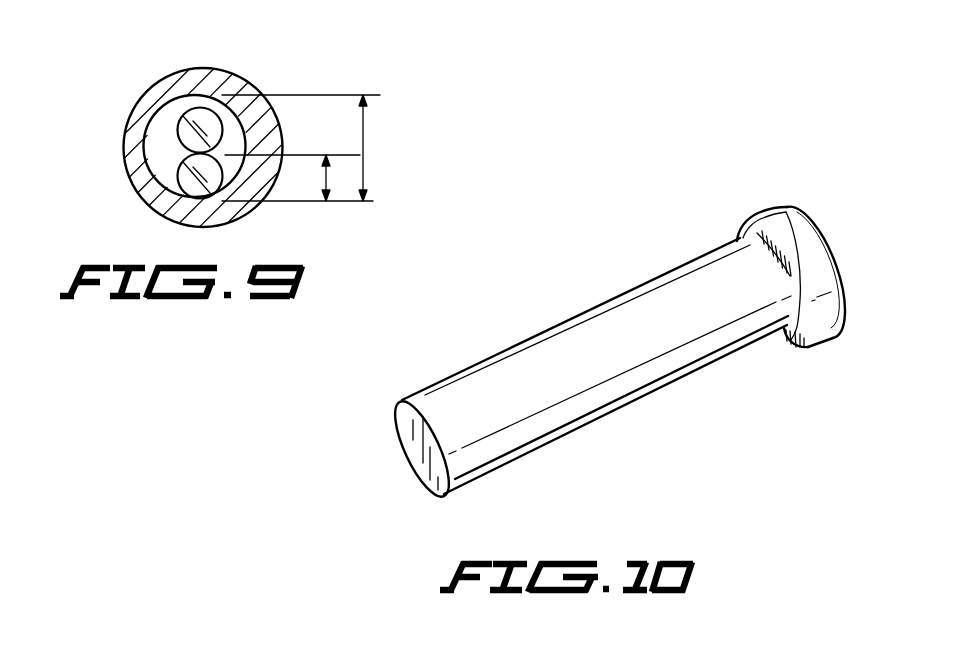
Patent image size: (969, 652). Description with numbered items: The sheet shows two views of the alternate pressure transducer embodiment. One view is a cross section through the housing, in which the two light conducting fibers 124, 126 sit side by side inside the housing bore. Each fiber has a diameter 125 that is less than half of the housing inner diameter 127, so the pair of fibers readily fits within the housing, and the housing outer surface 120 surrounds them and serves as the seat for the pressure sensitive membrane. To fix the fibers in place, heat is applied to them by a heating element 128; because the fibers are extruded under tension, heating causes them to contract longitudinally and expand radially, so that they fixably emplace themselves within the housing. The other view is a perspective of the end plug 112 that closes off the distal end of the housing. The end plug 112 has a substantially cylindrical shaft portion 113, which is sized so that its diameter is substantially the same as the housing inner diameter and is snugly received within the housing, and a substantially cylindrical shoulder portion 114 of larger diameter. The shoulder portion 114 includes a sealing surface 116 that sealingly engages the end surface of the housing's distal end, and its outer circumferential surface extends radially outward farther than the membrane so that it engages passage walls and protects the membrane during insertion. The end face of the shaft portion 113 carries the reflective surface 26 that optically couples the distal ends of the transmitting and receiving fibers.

In FIG. 10, the reflective surface 26 is at (415, 448).
In FIG. 10, the end plug 112 is at (664, 258).
In FIG. 10, the shaft portion 113 is at (620, 400).
In FIG. 10, the shoulder portion 114 is at (763, 208).
In FIG. 10, the sealing surface 116 is at (799, 350).
In FIG. 9, the housing outer surface 120 is at (240, 71).
In FIG. 9, the fiber 124 is at (178, 130).
In FIG. 9, the fiber diameter 125 is at (325, 177).
In FIG. 9, the fiber 126 is at (178, 179).
In FIG. 9, the housing inner diameter 127 is at (364, 150).
In FIG. 9, the heating element 128 is at (199, 226).